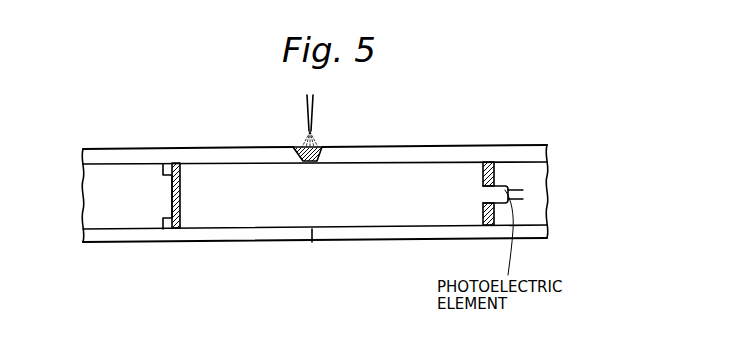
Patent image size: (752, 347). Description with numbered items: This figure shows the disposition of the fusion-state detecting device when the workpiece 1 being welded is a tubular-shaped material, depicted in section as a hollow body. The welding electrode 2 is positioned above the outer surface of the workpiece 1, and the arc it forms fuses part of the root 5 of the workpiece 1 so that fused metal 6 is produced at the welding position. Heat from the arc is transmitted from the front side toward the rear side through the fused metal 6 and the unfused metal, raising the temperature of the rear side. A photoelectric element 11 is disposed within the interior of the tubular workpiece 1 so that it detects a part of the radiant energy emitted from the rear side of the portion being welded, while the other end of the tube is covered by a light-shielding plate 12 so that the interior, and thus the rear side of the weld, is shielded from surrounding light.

The workpiece 1 is at (239, 150).
The welding electrode 2 is at (314, 101).
The root 5 is at (313, 242).
The fused metal 6 is at (320, 150).
The photoelectric element 11 is at (500, 184).
The light-shielding plate 12 is at (172, 200).